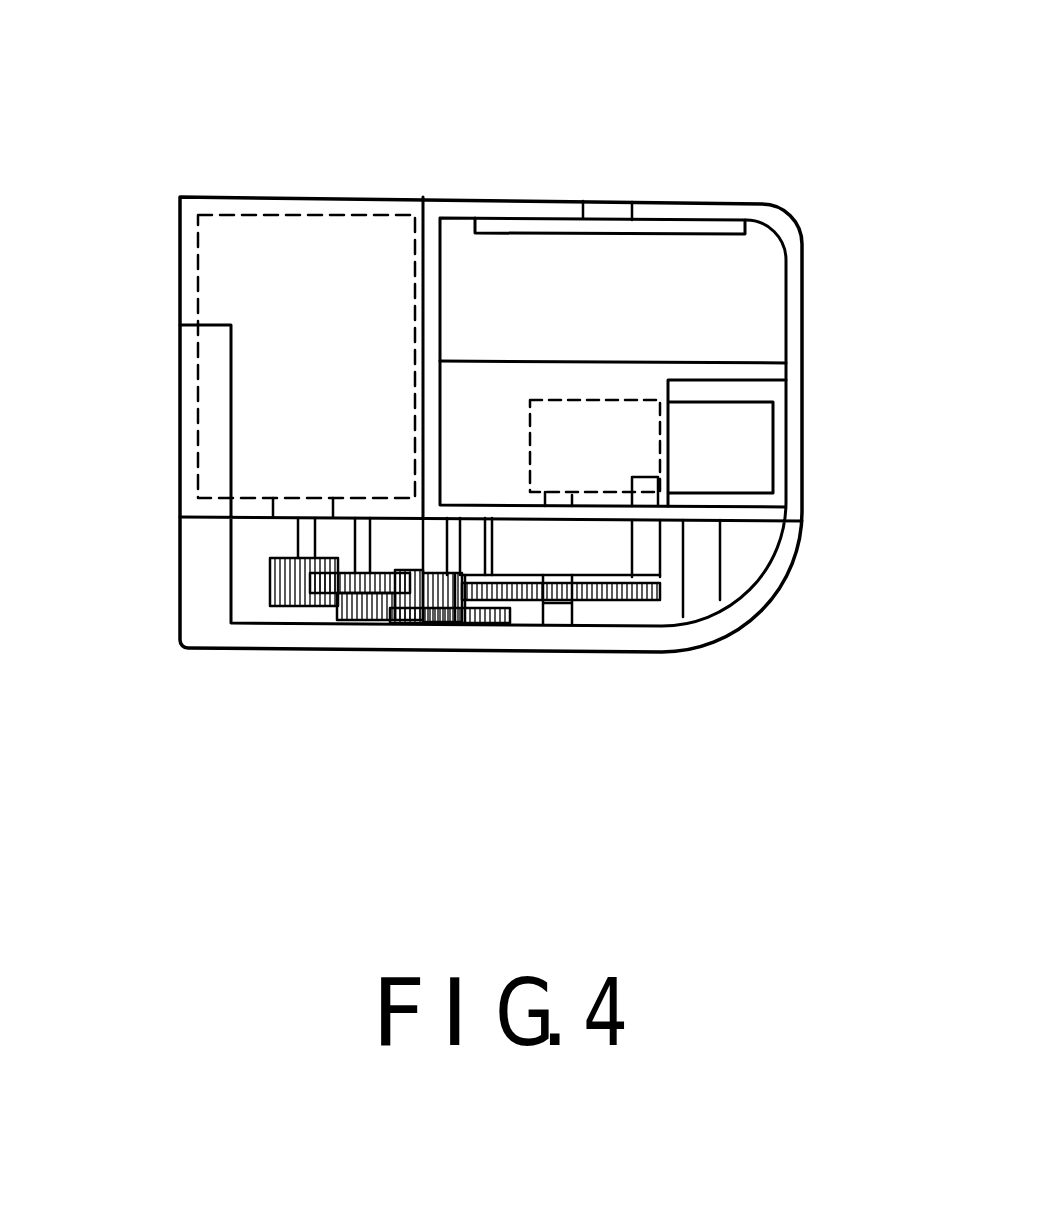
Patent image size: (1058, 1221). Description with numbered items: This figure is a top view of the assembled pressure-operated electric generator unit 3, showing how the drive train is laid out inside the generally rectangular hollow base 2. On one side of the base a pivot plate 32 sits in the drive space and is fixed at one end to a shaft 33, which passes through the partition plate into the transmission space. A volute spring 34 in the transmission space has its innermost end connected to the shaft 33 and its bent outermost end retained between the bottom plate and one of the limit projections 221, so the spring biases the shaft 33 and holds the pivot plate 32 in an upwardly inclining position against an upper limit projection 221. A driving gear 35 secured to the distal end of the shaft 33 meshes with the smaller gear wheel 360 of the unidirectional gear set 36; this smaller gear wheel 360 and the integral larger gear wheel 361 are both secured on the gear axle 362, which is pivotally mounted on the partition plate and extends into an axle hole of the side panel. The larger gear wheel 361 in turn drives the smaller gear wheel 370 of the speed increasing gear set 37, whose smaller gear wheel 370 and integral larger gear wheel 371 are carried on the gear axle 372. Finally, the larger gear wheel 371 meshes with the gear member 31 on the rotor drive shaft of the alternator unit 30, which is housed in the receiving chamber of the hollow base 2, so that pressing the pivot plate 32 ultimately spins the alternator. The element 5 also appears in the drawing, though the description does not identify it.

The hollow base 2 is at (500, 201).
The pressure-operated electric generator unit 3 is at (440, 719).
The top cover member 5 is at (717, 232).
The alternator unit 30 is at (323, 217).
The gear member 31 is at (280, 605).
The pivot plate 32 is at (747, 458).
The shaft 33 is at (567, 615).
The volute spring 34 is at (610, 548).
The driving gear 35 is at (637, 603).
The unidirectional gear set 36 is at (513, 617).
The speed increasing gear set 37 is at (356, 608).
The limit projections 221 is at (473, 540).
The smaller gear wheel 360 is at (423, 633).
The larger gear wheel 361 is at (473, 633).
The gear axle 362 is at (437, 542).
The smaller gear wheel 370 is at (376, 622).
The larger gear wheel 371 is at (340, 608).
The gear axle 372 is at (357, 543).